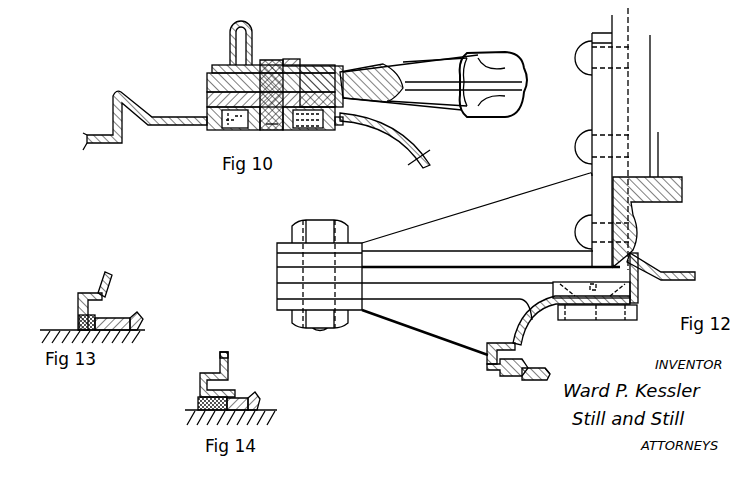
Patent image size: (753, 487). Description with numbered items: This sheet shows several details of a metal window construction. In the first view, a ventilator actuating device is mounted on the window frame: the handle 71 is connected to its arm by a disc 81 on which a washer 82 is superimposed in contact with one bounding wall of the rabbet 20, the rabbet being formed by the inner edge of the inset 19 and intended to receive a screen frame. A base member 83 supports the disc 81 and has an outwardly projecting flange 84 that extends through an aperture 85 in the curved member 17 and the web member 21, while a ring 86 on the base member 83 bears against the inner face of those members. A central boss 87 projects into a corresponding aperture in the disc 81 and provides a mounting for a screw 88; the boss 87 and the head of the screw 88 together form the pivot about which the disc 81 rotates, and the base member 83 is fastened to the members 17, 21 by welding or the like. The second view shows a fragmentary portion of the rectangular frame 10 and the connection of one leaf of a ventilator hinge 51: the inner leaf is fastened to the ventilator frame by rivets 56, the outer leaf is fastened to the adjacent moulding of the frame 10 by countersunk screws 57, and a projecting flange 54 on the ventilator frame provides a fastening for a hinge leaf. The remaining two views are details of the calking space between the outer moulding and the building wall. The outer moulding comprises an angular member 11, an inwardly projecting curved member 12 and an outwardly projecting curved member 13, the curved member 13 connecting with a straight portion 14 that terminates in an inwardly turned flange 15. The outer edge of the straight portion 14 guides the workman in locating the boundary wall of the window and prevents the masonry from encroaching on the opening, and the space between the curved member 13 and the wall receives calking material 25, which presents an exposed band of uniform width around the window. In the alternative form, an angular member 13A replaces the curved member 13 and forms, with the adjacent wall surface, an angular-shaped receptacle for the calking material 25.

In FIG. 12, the rectangular frame 10 is at (672, 280).
In FIG. 12, the angular member 11 is at (487, 360).
In FIG. 13, the angular member 11 is at (78, 300).
In FIG. 14, the angular member 11 is at (199, 382).
In FIG. 12, the inwardly projecting curved member 12 is at (532, 315).
In FIG. 13, the inwardly projecting curved member 12 is at (100, 278).
In FIG. 14, the inwardly projecting curved member 12 is at (222, 356).
In FIG. 12, the outwardly projecting curved member 13 is at (508, 377).
In FIG. 13, the outwardly projecting curved member 13 is at (74, 336).
In FIG. 14, the angular member 13A is at (190, 415).
In FIG. 12, the straight portion 14 is at (530, 380).
In FIG. 13, the straight portion 14 is at (118, 318).
In FIG. 14, the straight portion 14 is at (240, 398).
In FIG. 12, the inwardly turned flange 15 is at (548, 376).
In FIG. 13, the inwardly turned flange 15 is at (140, 317).
In FIG. 14, the inwardly turned flange 15 is at (259, 400).
In FIG. 10, the curved member 17 is at (406, 137).
In FIG. 10, the inset 19 is at (230, 48).
In FIG. 10, the rabbet 20 is at (260, 70).
In FIG. 10, the web member 21 is at (178, 123).
In FIG. 13, the calking material 25 is at (78, 322).
In FIG. 14, the calking material 25 is at (198, 403).
In FIG. 12, the hinge 51 is at (436, 264).
In FIG. 12, the projecting flange 54 is at (592, 214).
In FIG. 12, the rivets 56 is at (587, 54).
In FIG. 12, the countersunk screws 57 is at (586, 320).
In FIG. 10, the handle 71 is at (405, 63).
In FIG. 10, the disc 81 is at (207, 82).
In FIG. 10, the washer 82 is at (212, 67).
In FIG. 10, the base member 83 is at (207, 99).
In FIG. 10, the outwardly projecting flange 84 is at (334, 128).
In FIG. 10, the aperture 85 is at (343, 124).
In FIG. 10, the ring 86 is at (207, 114).
In FIG. 10, the central boss 87 is at (312, 68).
In FIG. 10, the screw 88 is at (289, 61).